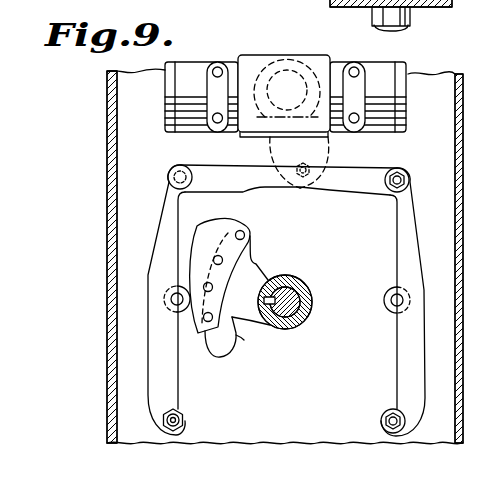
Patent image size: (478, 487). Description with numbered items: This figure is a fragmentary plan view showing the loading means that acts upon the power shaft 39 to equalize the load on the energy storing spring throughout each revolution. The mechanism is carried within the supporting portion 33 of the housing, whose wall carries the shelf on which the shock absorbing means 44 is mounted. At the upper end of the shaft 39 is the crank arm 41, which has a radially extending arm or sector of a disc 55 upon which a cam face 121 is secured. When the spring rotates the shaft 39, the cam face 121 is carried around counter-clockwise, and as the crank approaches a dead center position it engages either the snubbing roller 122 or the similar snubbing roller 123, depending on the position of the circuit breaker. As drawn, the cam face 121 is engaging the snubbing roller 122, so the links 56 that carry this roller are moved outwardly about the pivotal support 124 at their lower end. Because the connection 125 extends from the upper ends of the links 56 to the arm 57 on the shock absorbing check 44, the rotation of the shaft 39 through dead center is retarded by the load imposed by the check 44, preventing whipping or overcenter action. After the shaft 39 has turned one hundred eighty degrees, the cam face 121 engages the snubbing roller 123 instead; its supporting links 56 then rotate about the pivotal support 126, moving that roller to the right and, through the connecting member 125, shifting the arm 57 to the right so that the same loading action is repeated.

The supporting portion 33 is at (108, 198).
The power shaft 39 is at (293, 308).
The crank arm 41 is at (284, 290).
The shock absorbing means 44 is at (198, 66).
The sector of a disc 55 is at (241, 329).
The links 56 is at (165, 212).
The arm 57 is at (276, 148).
The cam face 121 is at (215, 212).
The snubbing roller 122 is at (187, 322).
The snubbing roller 123 is at (384, 299).
The pivotal support 124 is at (185, 414).
The connection 125 is at (365, 166).
The pivotal support 126 is at (383, 416).